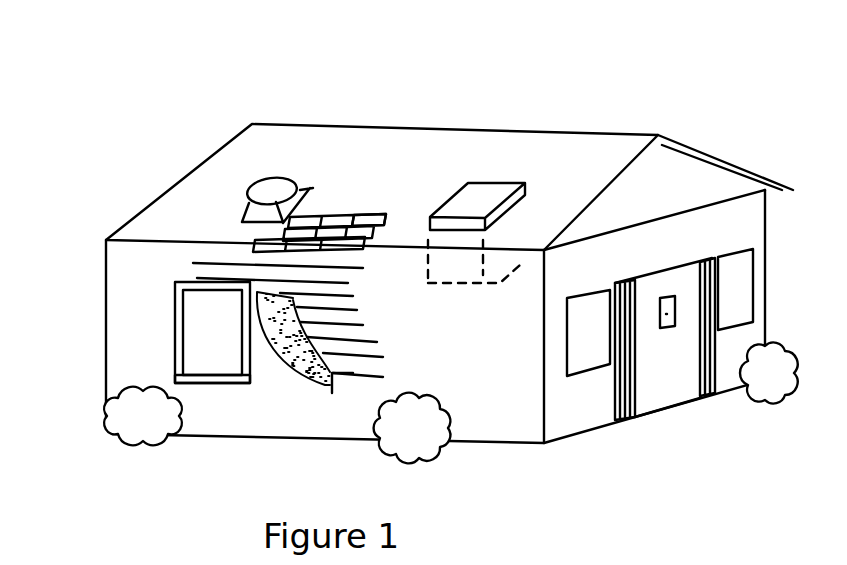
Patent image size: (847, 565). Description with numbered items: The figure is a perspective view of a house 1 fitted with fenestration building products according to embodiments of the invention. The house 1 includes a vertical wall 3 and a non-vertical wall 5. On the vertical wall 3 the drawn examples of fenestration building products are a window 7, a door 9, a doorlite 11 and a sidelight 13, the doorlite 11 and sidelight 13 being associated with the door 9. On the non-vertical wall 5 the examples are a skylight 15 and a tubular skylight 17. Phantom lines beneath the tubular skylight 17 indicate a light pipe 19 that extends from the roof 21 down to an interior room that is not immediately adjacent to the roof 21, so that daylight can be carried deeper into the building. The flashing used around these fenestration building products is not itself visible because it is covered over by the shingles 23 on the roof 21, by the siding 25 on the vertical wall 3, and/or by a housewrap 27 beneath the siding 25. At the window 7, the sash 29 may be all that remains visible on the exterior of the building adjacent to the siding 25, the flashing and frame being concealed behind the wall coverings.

The house 1 is at (432, 266).
The vertical wall 3 is at (287, 232).
The non-vertical wall 5 is at (174, 209).
The window 7 is at (178, 345).
The door 9 is at (731, 371).
The doorlite 11 is at (669, 316).
The sidelight 13 is at (638, 413).
The skylight 15 is at (284, 181).
The tubular skylight 17 is at (481, 196).
The light pipe 19 is at (521, 239).
The roof 21 is at (358, 197).
The shingles 23 is at (378, 222).
The siding 25 is at (355, 364).
The housewrap 27 is at (305, 371).
The sash 29 is at (235, 379).